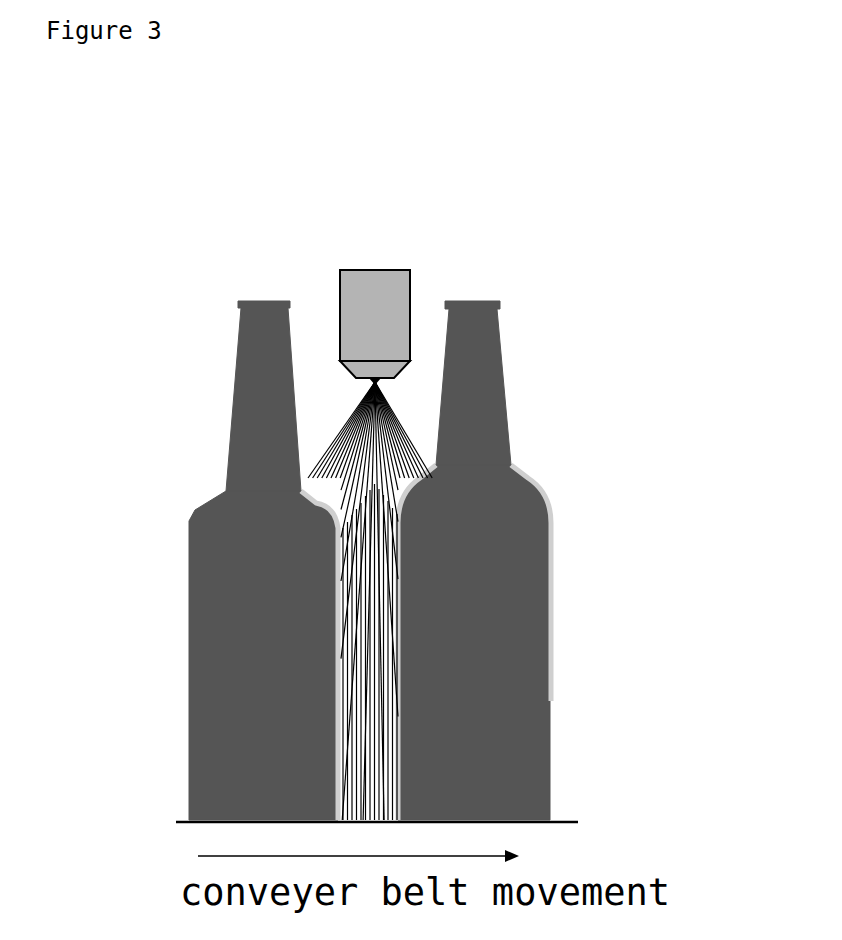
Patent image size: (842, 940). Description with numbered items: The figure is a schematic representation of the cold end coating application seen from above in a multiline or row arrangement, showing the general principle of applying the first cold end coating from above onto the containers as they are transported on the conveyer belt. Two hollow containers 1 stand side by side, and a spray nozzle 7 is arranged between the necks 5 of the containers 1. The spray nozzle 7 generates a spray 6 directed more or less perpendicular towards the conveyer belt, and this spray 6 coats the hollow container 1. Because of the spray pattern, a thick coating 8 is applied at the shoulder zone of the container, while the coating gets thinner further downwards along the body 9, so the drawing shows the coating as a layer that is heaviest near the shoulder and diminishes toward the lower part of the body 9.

The hollow container 1 is at (160, 556).
The neck 5 is at (212, 373).
The spray 6 is at (320, 403).
The spray nozzle 7 is at (378, 244).
The thick coating 8 is at (539, 481).
The body 9 is at (558, 636).